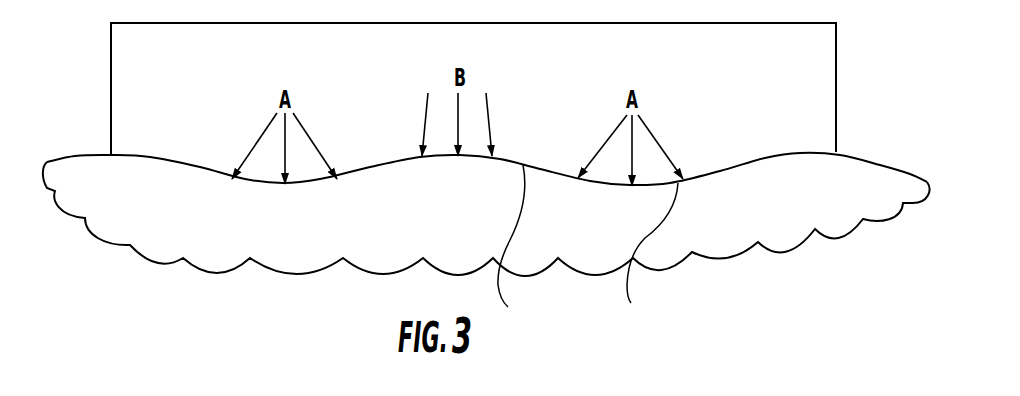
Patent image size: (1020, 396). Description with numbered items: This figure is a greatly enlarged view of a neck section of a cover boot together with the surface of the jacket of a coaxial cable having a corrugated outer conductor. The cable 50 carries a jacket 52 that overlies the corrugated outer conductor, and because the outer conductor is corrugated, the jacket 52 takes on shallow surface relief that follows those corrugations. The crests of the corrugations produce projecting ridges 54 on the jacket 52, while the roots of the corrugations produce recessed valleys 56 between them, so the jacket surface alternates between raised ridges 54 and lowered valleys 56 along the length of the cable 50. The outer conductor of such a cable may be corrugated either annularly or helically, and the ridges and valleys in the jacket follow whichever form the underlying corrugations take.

The cable 50 is at (730, 274).
The jacket 52 is at (785, 240).
The projecting ridges 54 is at (508, 253).
The recessed valleys 56 is at (647, 258).